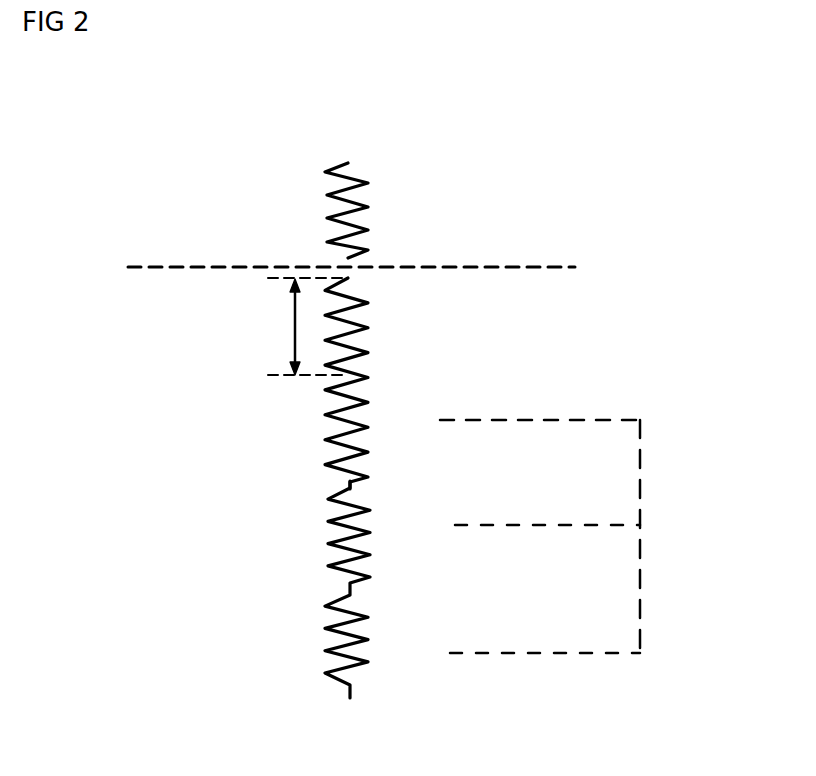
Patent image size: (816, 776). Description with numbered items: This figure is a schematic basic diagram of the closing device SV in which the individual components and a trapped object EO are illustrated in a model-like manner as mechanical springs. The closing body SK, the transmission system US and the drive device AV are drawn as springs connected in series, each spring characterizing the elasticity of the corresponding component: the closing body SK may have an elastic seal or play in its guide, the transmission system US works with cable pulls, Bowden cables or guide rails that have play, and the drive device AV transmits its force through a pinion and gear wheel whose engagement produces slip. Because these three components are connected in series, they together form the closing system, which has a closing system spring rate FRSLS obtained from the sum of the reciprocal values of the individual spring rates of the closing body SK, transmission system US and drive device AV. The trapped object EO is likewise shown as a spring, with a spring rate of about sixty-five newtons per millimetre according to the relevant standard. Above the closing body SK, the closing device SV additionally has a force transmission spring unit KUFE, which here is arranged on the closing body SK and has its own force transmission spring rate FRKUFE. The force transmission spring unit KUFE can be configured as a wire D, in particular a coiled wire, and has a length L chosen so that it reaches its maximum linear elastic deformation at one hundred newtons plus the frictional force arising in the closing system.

The closing device SV is at (152, 503).
The trapped object EO is at (362, 181).
The force transmission spring unit KUFE is at (369, 323).
The force transmission spring rate FRKUFE is at (346, 383).
The wire D is at (368, 300).
The length L is at (294, 328).
The closing body SK is at (369, 425).
The transmission system US is at (370, 533).
The drive device AV is at (369, 663).
The closing system spring rate FRSLS is at (640, 490).